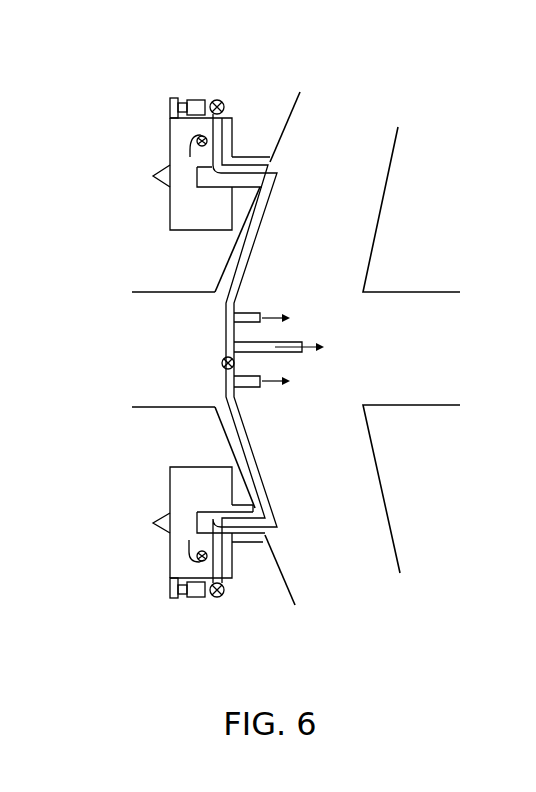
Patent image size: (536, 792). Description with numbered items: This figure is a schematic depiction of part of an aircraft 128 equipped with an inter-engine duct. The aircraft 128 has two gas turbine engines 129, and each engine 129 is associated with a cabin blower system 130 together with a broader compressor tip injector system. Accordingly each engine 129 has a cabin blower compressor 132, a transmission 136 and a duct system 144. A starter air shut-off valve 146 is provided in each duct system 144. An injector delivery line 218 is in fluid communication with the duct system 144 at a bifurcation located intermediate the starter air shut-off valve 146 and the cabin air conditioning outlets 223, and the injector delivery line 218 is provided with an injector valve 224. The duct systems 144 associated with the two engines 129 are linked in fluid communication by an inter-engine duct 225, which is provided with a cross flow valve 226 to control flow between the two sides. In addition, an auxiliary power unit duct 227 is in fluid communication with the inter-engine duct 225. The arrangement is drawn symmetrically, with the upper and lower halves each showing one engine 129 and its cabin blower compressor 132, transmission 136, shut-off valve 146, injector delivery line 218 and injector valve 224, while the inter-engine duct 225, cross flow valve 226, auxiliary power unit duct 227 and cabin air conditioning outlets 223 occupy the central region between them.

The aircraft 128 is at (372, 318).
The gas turbine engine 129 is at (200, 210).
The cabin blower system 130 is at (249, 120).
The cabin blower compressor 132 is at (194, 103).
The transmission 136 is at (170, 106).
The duct system 144 is at (258, 166).
The starter air shut-off valve 146 is at (221, 101).
The injector delivery line 218 is at (185, 156).
The cabin air conditioning outlets 223 is at (248, 313).
The injector valve 224 is at (186, 134).
The inter-engine duct 225 is at (224, 333).
The cross flow valve 226 is at (223, 365).
The auxiliary power unit duct 227 is at (278, 355).